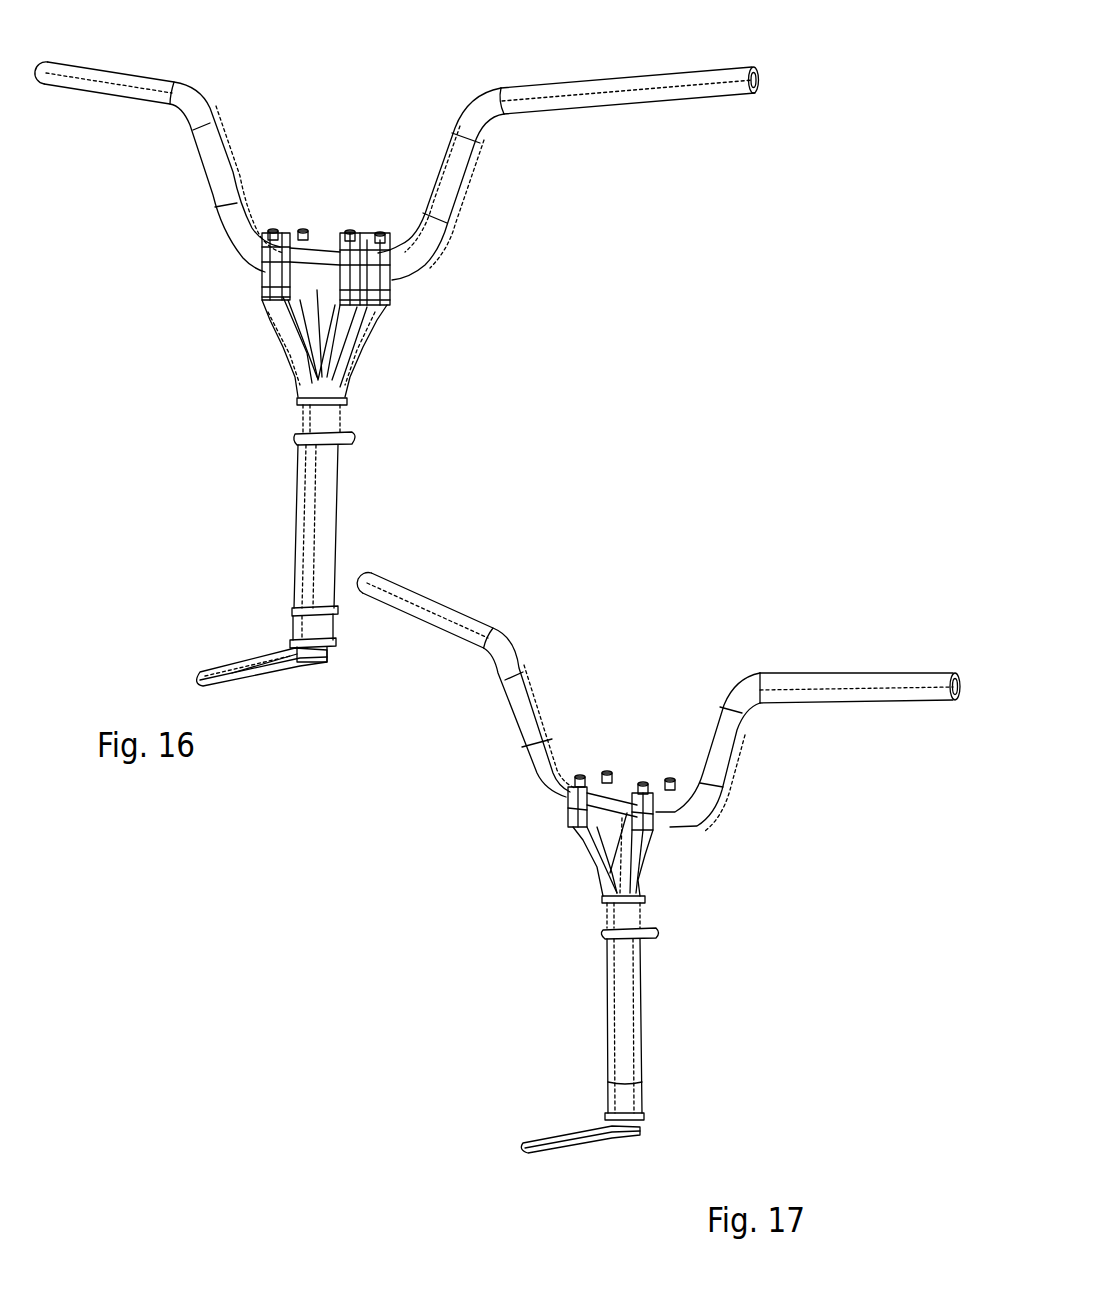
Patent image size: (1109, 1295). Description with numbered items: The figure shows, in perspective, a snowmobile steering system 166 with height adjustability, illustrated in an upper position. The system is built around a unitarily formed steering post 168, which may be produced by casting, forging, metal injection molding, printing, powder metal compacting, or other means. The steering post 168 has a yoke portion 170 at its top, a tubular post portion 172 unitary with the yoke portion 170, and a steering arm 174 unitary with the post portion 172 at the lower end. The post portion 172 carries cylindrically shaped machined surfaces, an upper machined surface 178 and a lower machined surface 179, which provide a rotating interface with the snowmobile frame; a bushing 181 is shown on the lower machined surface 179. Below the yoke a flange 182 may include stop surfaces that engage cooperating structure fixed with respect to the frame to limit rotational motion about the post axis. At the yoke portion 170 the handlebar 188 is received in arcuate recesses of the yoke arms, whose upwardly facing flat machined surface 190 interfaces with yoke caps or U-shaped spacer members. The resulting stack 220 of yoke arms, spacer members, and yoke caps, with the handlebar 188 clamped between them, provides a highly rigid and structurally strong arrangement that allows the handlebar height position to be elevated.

In FIG. 16, the steering system 166 is at (346, 128).
In FIG. 16, the handlebar 188 is at (565, 80).
In FIG. 16, the upwardly facing flat machined surface 190 is at (440, 287).
In FIG. 16, the stack 220 is at (238, 273).
In FIG. 16, the yoke portion 170 is at (373, 320).
In FIG. 17, the yoke portion 170 is at (583, 833).
In FIG. 16, the upper machined surface 178 is at (333, 422).
In FIG. 16, the flange 182 is at (360, 438).
In FIG. 17, the flange 182 is at (653, 930).
In FIG. 16, the steering post 168 is at (340, 505).
In FIG. 16, the tubular post portion 172 is at (337, 556).
In FIG. 16, the lower machined surface 179 is at (292, 610).
In FIG. 16, the bushing 181 is at (332, 615).
In FIG. 16, the steering arm 174 is at (243, 668).